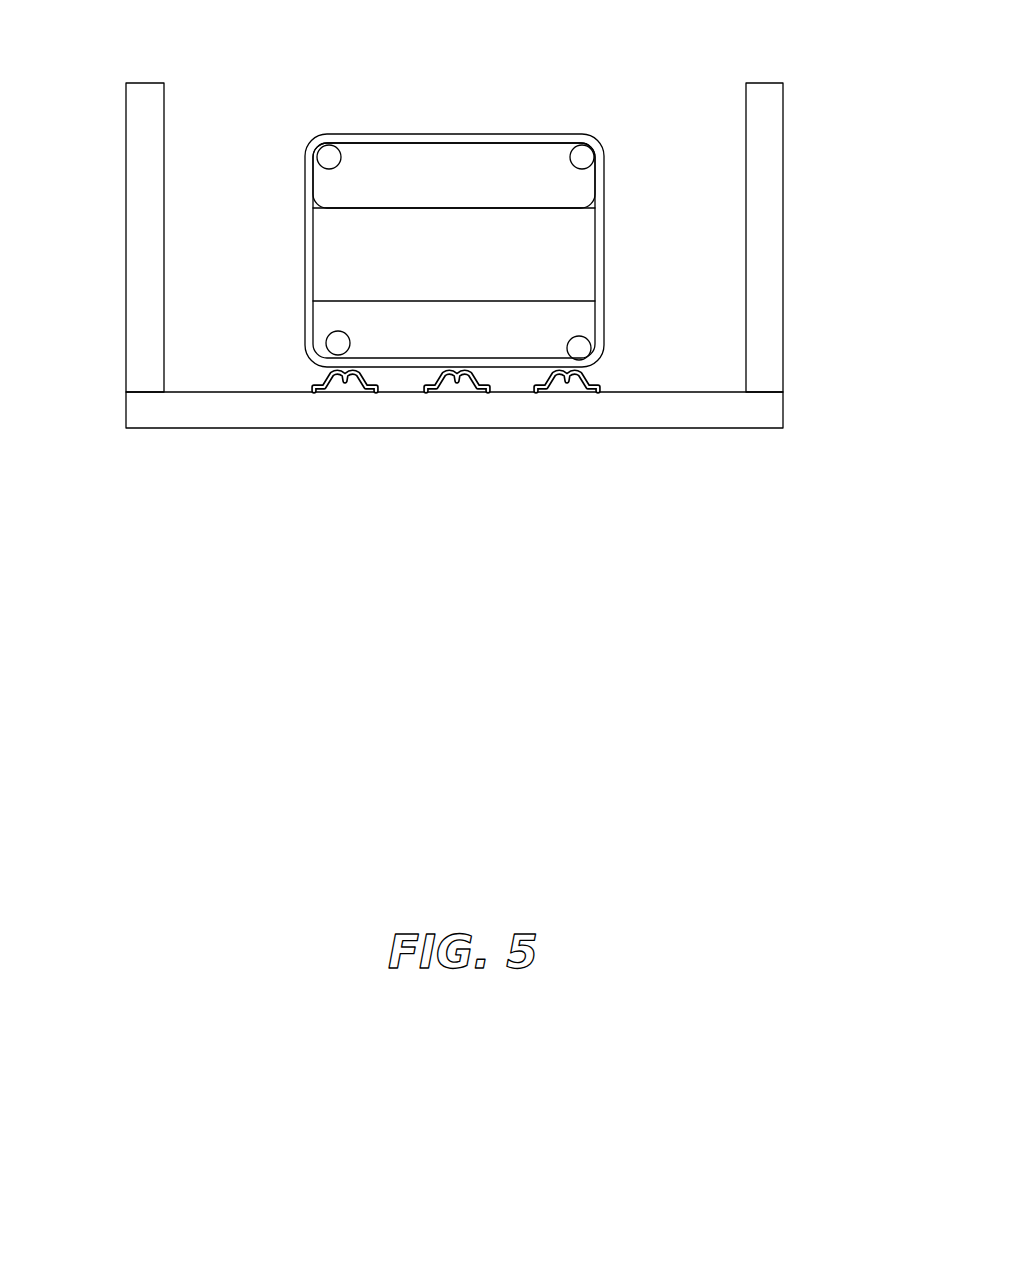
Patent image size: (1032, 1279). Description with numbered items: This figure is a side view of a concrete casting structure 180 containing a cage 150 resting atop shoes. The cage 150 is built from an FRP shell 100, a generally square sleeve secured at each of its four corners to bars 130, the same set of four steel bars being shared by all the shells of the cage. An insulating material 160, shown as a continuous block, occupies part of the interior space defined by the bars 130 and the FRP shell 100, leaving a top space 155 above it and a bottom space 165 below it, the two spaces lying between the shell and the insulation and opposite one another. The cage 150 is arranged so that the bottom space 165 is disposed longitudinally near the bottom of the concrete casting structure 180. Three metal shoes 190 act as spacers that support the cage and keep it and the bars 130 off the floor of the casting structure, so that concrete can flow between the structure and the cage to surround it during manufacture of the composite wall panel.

The FRP shell 100 is at (493, 137).
The bars 130 is at (329, 157).
The multiple shell cage 150 is at (262, 122).
The top space 155 is at (428, 177).
The insulating material 160 is at (340, 252).
The bottom space 165 is at (452, 346).
The concrete casting structure 180 is at (768, 240).
The metal shoes 190 is at (372, 393).